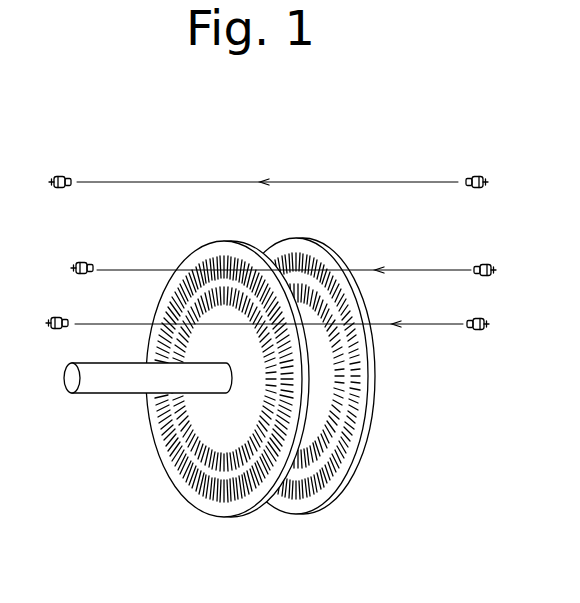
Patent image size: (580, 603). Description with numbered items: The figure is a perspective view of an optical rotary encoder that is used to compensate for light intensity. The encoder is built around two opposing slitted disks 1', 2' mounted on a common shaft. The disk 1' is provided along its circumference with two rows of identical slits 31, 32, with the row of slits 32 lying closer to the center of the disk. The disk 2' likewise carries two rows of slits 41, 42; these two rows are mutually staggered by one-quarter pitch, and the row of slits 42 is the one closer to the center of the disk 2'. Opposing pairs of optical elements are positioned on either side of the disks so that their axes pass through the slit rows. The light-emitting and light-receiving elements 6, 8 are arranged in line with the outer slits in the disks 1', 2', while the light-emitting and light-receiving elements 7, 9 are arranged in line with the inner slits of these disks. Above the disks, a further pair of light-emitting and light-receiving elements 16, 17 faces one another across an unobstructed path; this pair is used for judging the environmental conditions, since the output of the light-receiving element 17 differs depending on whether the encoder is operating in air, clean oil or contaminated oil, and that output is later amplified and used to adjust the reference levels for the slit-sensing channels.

The slitted disk 1' is at (221, 388).
The slitted disk 2' is at (372, 393).
The row of slits 31 is at (210, 258).
The row of slits 32 is at (240, 462).
The row of slits 41 is at (363, 360).
The row of slits 42 is at (333, 423).
The light-emitting element 6 is at (492, 264).
The light-emitting element 7 is at (487, 332).
The light-receiving element 8 is at (83, 262).
The light-receiving element 9 is at (48, 326).
The light-emitting element 16 is at (481, 176).
The light-receiving element 17 is at (62, 176).